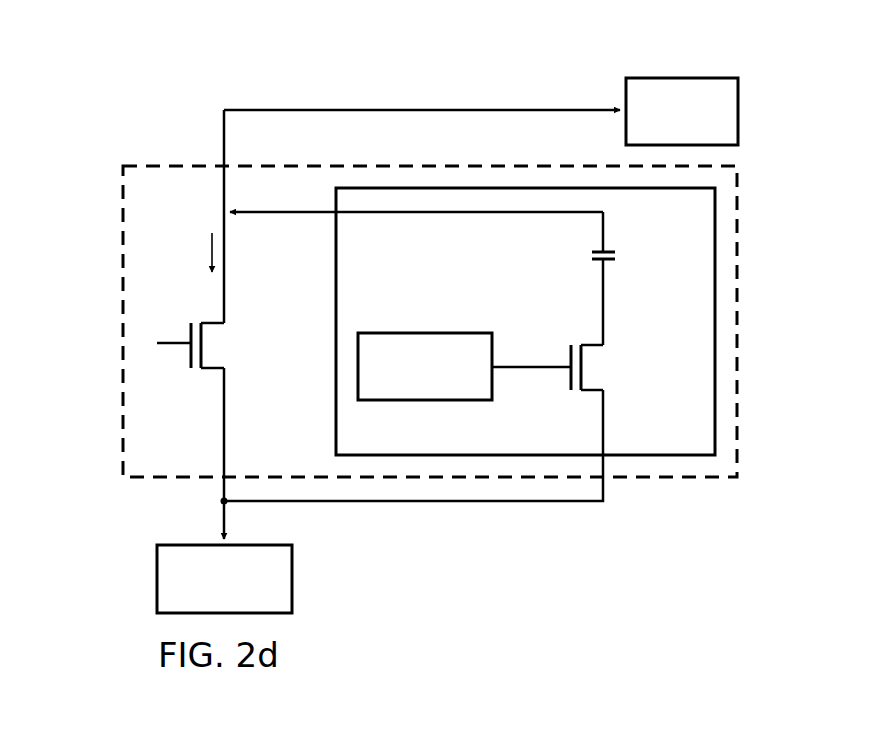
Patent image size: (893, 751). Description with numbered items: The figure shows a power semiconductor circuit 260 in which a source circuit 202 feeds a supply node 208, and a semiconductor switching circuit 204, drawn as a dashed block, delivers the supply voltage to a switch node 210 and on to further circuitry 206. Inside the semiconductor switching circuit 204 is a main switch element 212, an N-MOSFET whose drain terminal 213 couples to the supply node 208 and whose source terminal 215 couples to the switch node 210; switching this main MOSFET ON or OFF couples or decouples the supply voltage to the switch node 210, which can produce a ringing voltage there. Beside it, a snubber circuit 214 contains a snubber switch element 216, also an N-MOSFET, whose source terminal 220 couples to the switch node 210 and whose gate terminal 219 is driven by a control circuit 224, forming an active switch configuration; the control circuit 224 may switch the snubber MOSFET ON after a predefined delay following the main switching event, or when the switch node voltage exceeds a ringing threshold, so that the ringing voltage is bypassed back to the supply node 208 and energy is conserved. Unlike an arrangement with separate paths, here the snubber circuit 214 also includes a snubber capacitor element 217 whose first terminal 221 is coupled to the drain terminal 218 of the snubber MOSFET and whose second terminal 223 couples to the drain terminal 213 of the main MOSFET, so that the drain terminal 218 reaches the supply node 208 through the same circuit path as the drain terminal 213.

The power semiconductor circuit 260 is at (128, 84).
The source circuit 202 is at (681, 78).
The semiconductor switching circuit 204 is at (118, 254).
The further circuitry 206 is at (157, 580).
The supply node 208 is at (425, 110).
The switch node 210 is at (216, 504).
The main switch element 212 is at (232, 346).
The drain terminal of the main MOSFET 213 is at (222, 313).
The snubber circuit 214 is at (330, 287).
The source terminal of the main MOSFET 215 is at (187, 386).
The snubber switch element 216 is at (581, 376).
The snubber capacitor element 217 is at (586, 256).
The drain terminal of the snubber MOSFET 218 is at (606, 337).
The gate terminal of the snubber MOSFET 219 is at (562, 365).
The source terminal of the snubber MOSFET 220 is at (606, 400).
The first terminal of the snubber capacitor element 221 is at (606, 266).
The second terminal of the snubber capacitor element 223 is at (606, 245).
The control circuit 224 is at (425, 333).